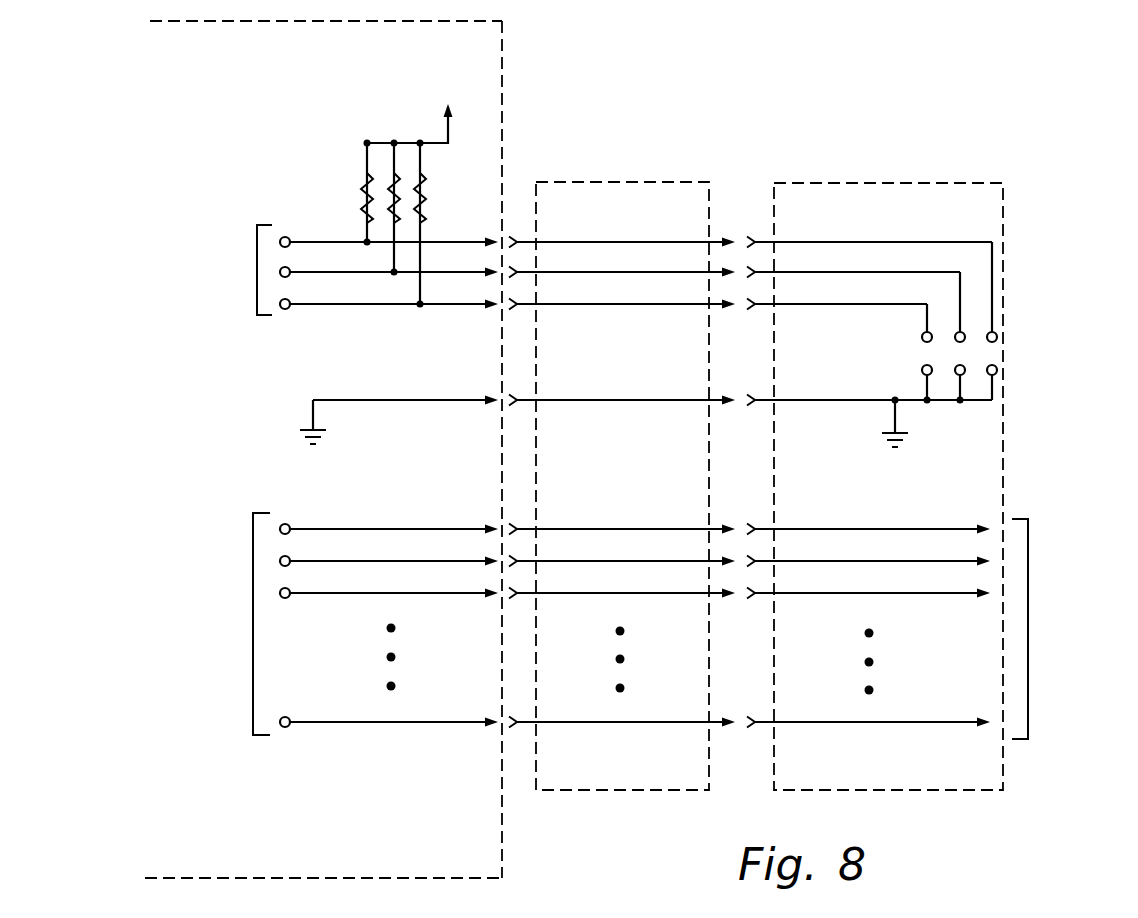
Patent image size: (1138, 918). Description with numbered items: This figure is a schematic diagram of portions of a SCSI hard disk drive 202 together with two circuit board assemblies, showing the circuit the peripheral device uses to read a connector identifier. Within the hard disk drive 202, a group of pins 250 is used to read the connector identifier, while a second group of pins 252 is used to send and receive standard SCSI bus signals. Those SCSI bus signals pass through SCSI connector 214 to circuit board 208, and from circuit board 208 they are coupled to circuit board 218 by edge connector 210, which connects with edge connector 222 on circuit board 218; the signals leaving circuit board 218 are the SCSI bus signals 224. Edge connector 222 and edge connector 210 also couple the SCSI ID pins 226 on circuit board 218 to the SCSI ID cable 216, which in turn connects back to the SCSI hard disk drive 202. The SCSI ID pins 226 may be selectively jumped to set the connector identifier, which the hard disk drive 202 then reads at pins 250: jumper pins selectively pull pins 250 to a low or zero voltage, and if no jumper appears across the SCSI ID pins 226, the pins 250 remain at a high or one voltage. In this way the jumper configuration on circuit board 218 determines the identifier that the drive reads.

The SCSI hard disk drive 202 is at (503, 62).
The circuit board 208 is at (648, 183).
The edge connector 210 is at (723, 775).
The SCSI connector 214 is at (519, 775).
The SCSI ID cable 216 is at (520, 194).
The circuit board 218 is at (950, 183).
The edge connector 222 is at (758, 775).
The SCSI bus signals 224 is at (978, 629).
The SCSI ID pins 226 is at (1008, 356).
The pins 250 is at (340, 207).
The pins 252 is at (338, 624).